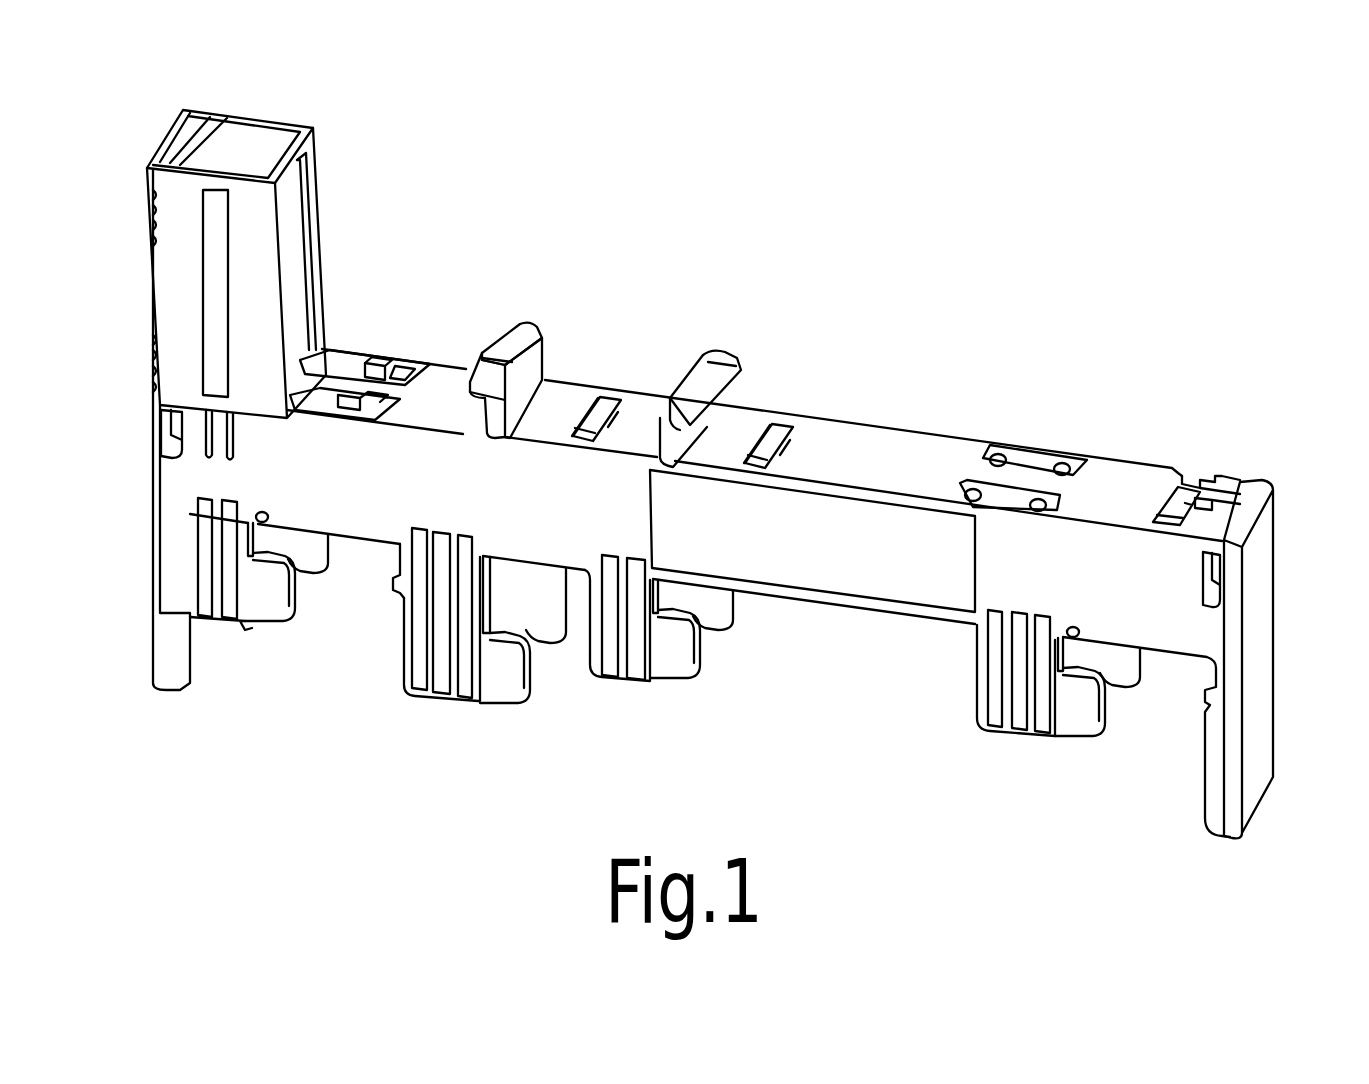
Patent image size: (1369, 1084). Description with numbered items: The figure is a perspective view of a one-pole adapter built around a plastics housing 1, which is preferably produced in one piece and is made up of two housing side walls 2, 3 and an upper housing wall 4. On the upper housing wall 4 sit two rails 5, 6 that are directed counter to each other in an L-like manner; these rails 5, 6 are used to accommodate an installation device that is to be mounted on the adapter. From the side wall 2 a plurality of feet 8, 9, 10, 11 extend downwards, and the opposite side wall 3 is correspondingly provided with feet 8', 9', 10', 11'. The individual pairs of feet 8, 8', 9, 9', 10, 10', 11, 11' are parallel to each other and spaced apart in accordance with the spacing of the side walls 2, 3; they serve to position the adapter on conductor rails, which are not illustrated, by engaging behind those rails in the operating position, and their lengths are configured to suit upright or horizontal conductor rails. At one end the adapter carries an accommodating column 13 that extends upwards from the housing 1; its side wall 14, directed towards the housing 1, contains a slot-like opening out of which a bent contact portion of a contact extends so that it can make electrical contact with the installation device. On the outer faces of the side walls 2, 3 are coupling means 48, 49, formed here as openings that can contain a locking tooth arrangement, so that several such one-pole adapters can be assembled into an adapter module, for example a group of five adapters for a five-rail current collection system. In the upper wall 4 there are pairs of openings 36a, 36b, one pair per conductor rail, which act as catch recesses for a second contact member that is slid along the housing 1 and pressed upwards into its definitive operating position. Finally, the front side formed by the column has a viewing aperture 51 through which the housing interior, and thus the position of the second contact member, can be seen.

The plastics housing 1 is at (958, 423).
The housing side wall 2 is at (907, 580).
The housing side wall 3 is at (1157, 465).
The upper housing wall 4 is at (865, 443).
The rail 5 is at (513, 335).
The rail 6 is at (722, 370).
The foot 8 is at (242, 593).
The foot 8' is at (326, 576).
The foot 9 is at (467, 647).
The foot 9' is at (536, 634).
The foot 10 is at (649, 658).
The foot 10' is at (718, 630).
The foot 11 is at (1041, 708).
The foot 11' is at (1118, 689).
The accommodating column 13 is at (263, 135).
The side wall of the column 14 is at (332, 172).
The opening 36a is at (382, 362).
The opening 36b is at (352, 405).
The coupling means 48 is at (157, 432).
The coupling means 49 is at (1222, 577).
The viewing aperture 51 is at (132, 356).